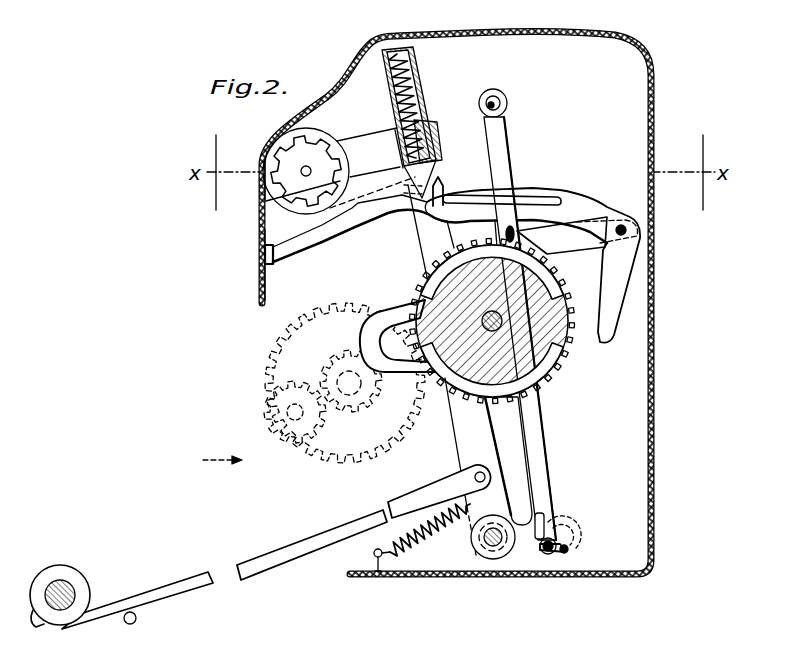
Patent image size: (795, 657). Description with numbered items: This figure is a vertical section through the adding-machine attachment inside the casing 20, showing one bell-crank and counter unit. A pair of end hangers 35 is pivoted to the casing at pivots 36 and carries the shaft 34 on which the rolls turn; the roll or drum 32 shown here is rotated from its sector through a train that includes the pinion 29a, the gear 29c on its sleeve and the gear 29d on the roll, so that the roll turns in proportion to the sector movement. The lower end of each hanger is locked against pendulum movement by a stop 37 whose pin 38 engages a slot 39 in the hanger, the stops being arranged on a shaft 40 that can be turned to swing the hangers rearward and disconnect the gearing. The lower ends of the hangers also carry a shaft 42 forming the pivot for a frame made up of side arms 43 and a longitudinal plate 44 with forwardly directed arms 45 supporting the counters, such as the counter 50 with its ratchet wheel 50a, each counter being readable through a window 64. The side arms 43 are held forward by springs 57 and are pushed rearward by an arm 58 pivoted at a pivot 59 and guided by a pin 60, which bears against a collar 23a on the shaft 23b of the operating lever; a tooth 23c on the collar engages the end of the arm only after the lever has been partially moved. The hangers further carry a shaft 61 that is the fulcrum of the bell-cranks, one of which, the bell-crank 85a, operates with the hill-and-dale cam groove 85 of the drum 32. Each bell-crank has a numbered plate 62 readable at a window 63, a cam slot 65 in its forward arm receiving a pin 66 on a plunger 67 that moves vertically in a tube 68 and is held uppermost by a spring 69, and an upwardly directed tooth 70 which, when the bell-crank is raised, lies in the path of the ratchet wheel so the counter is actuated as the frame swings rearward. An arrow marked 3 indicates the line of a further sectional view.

The casing 20 is at (653, 322).
The window 64 is at (263, 180).
The window 63 is at (241, 265).
The numbered plate 62 is at (283, 266).
The counter 50 is at (280, 157).
The ratchet wheel 50a is at (295, 185).
The forwardly directed arms 45 is at (365, 139).
The upwardly directed tooth 70 is at (303, 205).
The plunger 67 is at (380, 234).
The pin 66 is at (440, 228).
The tube 68 is at (418, 72).
The spring 69 is at (421, 96).
The longitudinally arranged plate 44 is at (436, 132).
The pivot 36 is at (507, 103).
The end hangers 35 is at (545, 473).
The bell-crank 85a is at (556, 195).
The shaft 61 is at (621, 223).
The cam slot 65 is at (460, 199).
The gear 29d is at (546, 257).
The gear 29c is at (290, 347).
The pinion 29a is at (337, 370).
The cam groove 85 is at (500, 428).
The roll 32 is at (548, 365).
The shaft 34 is at (501, 322).
The side arms 43 is at (449, 447).
The pivot 59 is at (468, 476).
The arm 58 is at (315, 536).
The springs 57 is at (376, 551).
The shaft 42 is at (483, 543).
The slot 39 is at (553, 538).
The pin 38 is at (546, 552).
The stop 37 is at (552, 553).
The shaft 40 is at (568, 550).
The collar 23a is at (85, 592).
The shaft 23b is at (63, 583).
The tooth 23c is at (36, 626).
The pin 60 is at (135, 623).
The section arrow 3 is at (213, 463).